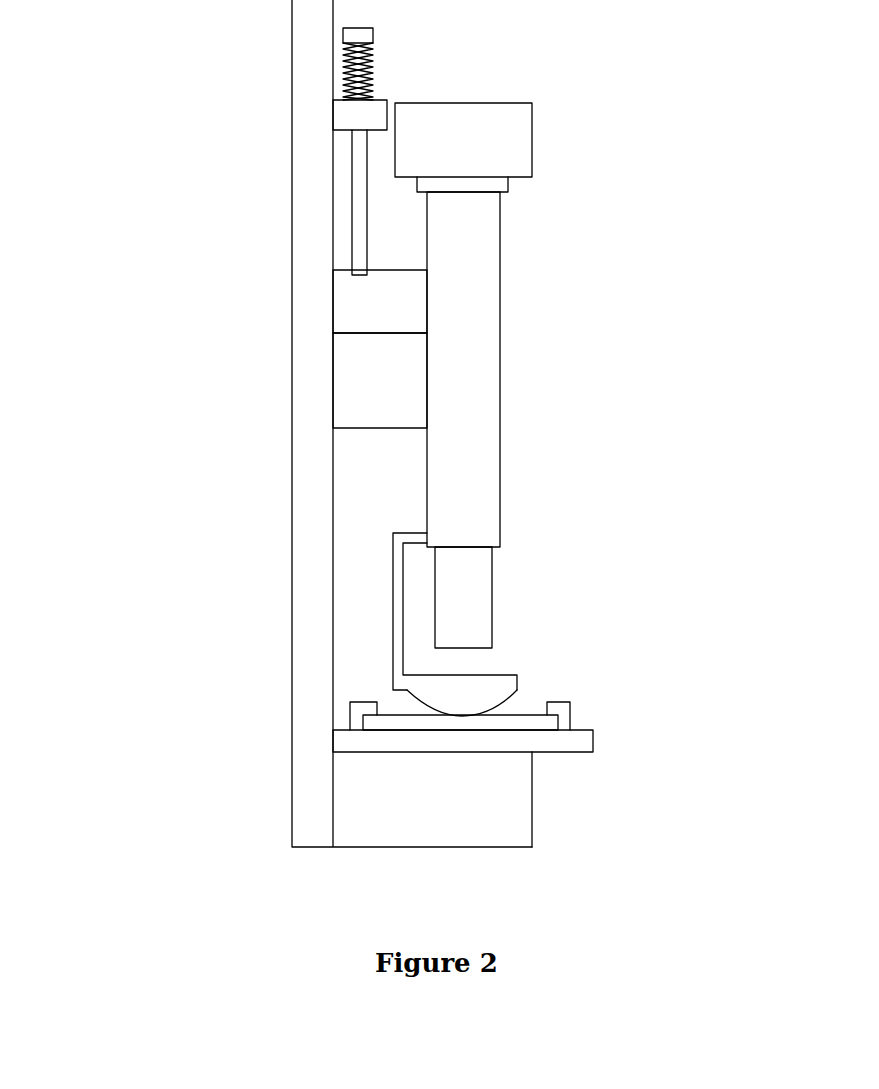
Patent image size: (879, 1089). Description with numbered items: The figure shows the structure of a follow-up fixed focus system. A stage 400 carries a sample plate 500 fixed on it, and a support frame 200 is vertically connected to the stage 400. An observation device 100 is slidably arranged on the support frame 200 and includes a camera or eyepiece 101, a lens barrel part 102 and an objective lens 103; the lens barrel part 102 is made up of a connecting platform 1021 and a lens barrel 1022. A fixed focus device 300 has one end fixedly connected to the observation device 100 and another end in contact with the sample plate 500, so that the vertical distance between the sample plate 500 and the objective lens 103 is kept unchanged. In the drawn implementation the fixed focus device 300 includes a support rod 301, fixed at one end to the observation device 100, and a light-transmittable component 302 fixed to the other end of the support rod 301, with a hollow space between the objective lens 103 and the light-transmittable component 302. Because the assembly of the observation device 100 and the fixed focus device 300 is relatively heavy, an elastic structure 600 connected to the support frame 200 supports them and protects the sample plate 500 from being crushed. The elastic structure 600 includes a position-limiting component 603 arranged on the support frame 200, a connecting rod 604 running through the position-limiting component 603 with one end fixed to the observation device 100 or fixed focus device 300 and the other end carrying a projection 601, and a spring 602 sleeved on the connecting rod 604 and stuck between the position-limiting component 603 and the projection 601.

The observation device 100 is at (418, 363).
The camera or eyepiece 101 is at (460, 138).
The lens barrel part 102 is at (345, 369).
The connecting platform 1021 is at (360, 402).
The lens barrel 1022 is at (458, 333).
The objective lens 103 is at (516, 597).
The support frame 200 is at (313, 540).
The fixed focus device 300 is at (308, 622).
The support rod 301 is at (402, 617).
The light-transmittable component 302 is at (453, 705).
The stage 400 is at (442, 777).
The sample plate 500 is at (515, 723).
The elastic structure 600 is at (357, 151).
The projection 601 is at (343, 35).
The spring 602 is at (343, 73).
The position-limiting component 603 is at (357, 117).
The connecting rod 604 is at (357, 182).